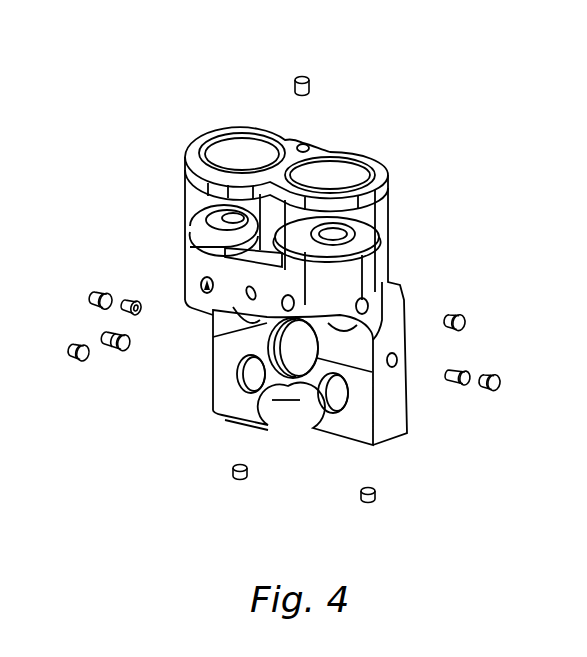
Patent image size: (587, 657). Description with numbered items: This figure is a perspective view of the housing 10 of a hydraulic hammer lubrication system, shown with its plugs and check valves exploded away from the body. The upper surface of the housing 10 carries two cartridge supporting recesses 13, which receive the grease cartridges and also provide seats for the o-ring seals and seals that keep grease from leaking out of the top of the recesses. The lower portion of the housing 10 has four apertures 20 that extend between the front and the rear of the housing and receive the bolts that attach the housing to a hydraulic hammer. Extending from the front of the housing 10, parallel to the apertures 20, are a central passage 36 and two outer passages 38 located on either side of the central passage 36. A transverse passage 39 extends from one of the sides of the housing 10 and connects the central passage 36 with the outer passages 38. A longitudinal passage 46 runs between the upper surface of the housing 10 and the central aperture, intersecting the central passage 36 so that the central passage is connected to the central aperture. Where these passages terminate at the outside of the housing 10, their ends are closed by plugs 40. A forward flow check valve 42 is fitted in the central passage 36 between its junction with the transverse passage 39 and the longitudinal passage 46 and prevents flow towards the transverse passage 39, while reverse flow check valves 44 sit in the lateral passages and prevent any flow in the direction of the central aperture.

The housing 10 is at (152, 123).
The cartridge supporting recesses 13 is at (236, 148).
The longitudinal passage 46 is at (308, 146).
The central passage 36 is at (250, 296).
The outer passages 38 is at (205, 283).
The transverse passage 39 is at (368, 306).
The apertures 20 is at (247, 372).
The plugs 40 is at (300, 75).
The forward flow check valve 42 is at (117, 352).
The reverse flow check valves 44 is at (127, 300).